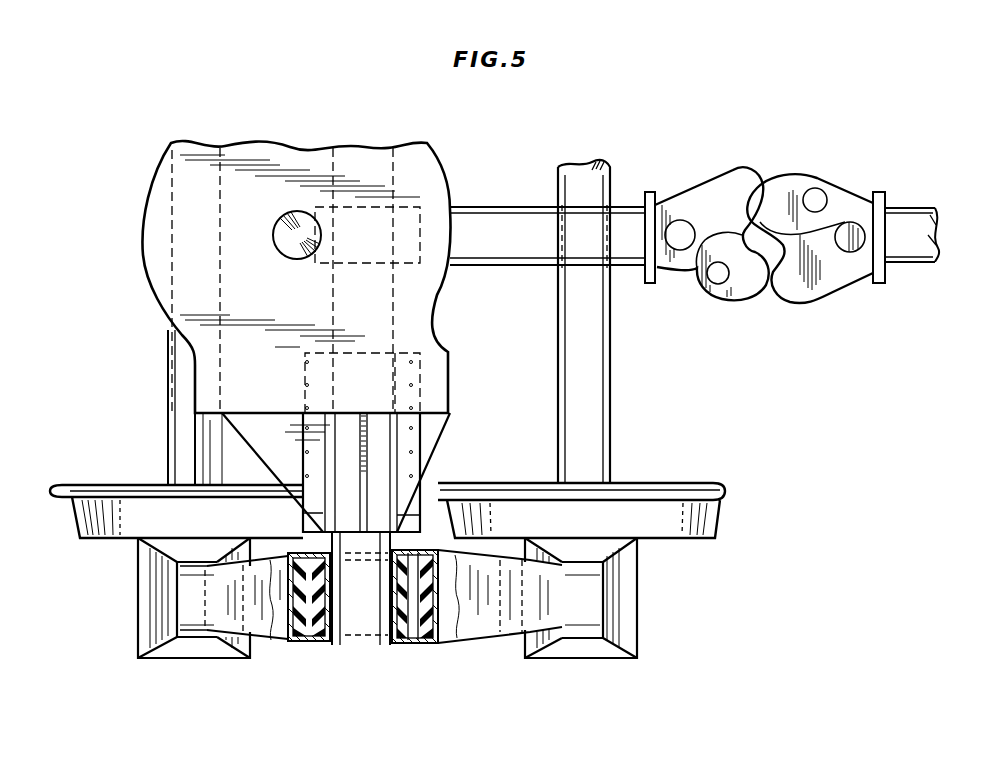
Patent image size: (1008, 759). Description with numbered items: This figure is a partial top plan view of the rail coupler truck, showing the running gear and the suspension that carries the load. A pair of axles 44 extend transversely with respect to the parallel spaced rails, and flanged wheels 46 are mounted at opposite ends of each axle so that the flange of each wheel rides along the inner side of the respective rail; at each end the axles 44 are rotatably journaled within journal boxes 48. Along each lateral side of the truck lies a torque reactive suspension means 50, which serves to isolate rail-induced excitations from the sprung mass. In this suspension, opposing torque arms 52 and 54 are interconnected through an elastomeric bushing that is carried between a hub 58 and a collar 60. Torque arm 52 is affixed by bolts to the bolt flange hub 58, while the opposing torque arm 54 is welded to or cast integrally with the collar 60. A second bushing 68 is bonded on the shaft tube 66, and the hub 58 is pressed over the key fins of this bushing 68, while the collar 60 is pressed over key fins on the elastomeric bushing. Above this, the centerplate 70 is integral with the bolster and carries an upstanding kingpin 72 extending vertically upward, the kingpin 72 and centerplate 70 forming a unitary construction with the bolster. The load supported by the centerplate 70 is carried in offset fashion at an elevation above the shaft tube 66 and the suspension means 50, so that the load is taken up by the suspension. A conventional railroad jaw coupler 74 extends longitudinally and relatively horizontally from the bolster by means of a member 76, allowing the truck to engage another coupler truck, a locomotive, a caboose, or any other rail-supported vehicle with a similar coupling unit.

The axle 44 is at (172, 440).
The flanged wheel 46 is at (66, 485).
The journal box 48 is at (138, 628).
The torque reactive suspension means 50 is at (371, 636).
The torque arm 52 is at (262, 632).
The opposing torque arm 54 is at (488, 636).
The hub 58 is at (312, 644).
The collar 60 is at (430, 625).
The shaft tube 66 is at (391, 646).
The second bushing 68 is at (415, 645).
The centerplate 70 is at (160, 290).
The kingpin 72 is at (283, 222).
The railroad jaw coupler 74 is at (690, 286).
The member 76 is at (516, 222).